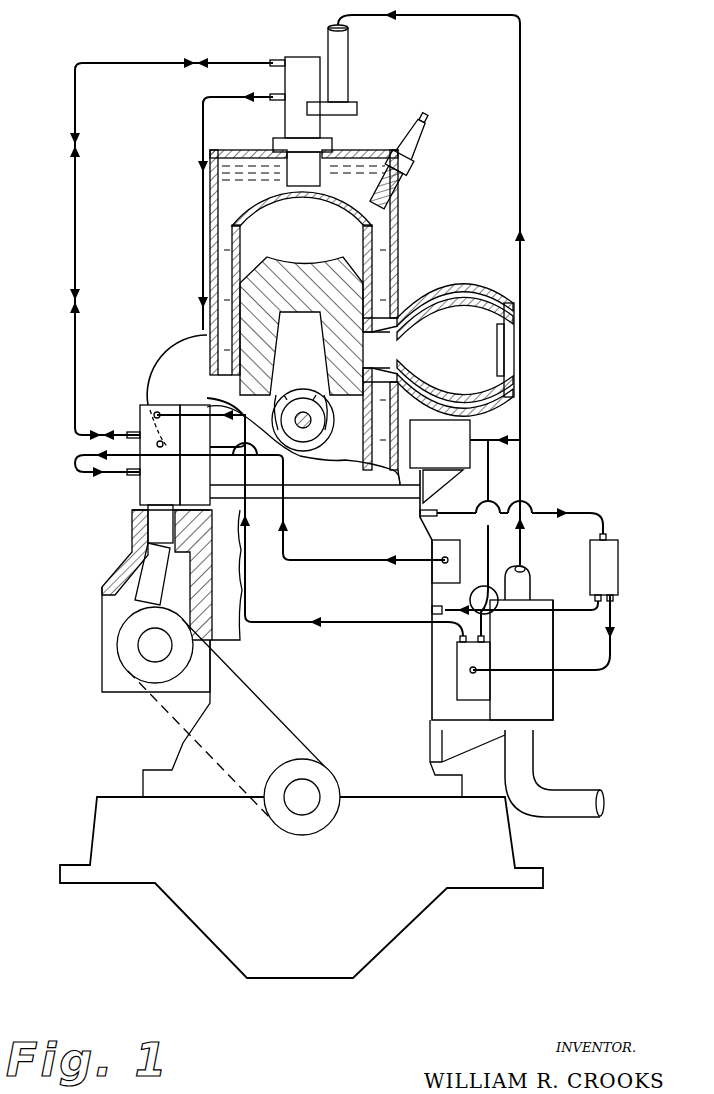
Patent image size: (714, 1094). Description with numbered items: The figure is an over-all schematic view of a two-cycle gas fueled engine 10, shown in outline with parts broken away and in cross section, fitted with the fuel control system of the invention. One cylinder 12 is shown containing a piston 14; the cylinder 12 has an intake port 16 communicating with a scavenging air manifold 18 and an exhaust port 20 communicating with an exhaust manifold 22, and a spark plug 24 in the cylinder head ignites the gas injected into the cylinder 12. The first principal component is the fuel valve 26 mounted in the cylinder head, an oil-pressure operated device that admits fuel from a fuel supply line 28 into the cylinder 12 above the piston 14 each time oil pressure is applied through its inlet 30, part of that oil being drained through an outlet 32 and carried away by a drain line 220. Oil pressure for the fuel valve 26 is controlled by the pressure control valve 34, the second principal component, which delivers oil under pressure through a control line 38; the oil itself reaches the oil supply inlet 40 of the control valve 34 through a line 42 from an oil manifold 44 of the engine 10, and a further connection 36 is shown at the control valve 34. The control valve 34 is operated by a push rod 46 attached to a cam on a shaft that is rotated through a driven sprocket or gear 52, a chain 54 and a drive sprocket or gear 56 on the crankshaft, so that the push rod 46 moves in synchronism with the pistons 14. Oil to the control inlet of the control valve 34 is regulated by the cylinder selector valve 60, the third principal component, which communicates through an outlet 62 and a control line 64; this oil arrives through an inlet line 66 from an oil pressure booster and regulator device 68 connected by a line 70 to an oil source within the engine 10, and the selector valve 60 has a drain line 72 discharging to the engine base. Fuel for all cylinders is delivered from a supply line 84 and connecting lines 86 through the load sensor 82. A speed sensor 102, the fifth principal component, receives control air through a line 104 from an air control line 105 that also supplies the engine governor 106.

The two-cycle gas fueled engine 10 is at (424, 196).
The cylinder 12 is at (240, 232).
The piston 14 is at (344, 260).
The intake port 16 is at (204, 384).
The scavenging air manifold 18 is at (155, 376).
The exhaust port 20 is at (386, 318).
The exhaust manifold 22 is at (476, 290).
The spark plug 24 is at (420, 135).
The fuel valve 26 is at (302, 48).
The fuel supply line 28 is at (350, 64).
The inlet 30 is at (270, 60).
The outlet 32 is at (275, 104).
The pressure control valve 34 is at (135, 508).
The pipe 36 is at (128, 430).
The control line 38 is at (78, 245).
The oil supply inlet 40 is at (125, 474).
The line 42 is at (304, 540).
The oil manifold 44 is at (436, 538).
The push rod 46 is at (122, 570).
The driven sprocket or gear 52 is at (117, 640).
The chain 54 is at (266, 695).
The drive sprocket or gear 56 is at (338, 778).
The cylinder selector valve 60 is at (453, 680).
The outlet 62 is at (458, 640).
The control line 64 is at (366, 620).
The inlet line 66 is at (612, 648).
The oil pressure booster and regulator device 68 is at (620, 575).
The line 70 is at (548, 504).
The drain line 72 is at (483, 636).
The load sensor 82 is at (557, 692).
The supply line 84 is at (585, 790).
The connecting lines 86 is at (532, 578).
The speed sensor 102 is at (432, 608).
The line 104 is at (492, 474).
The air control line 105 is at (500, 432).
The engine governor 106 is at (455, 420).
The drain line 220 is at (208, 216).